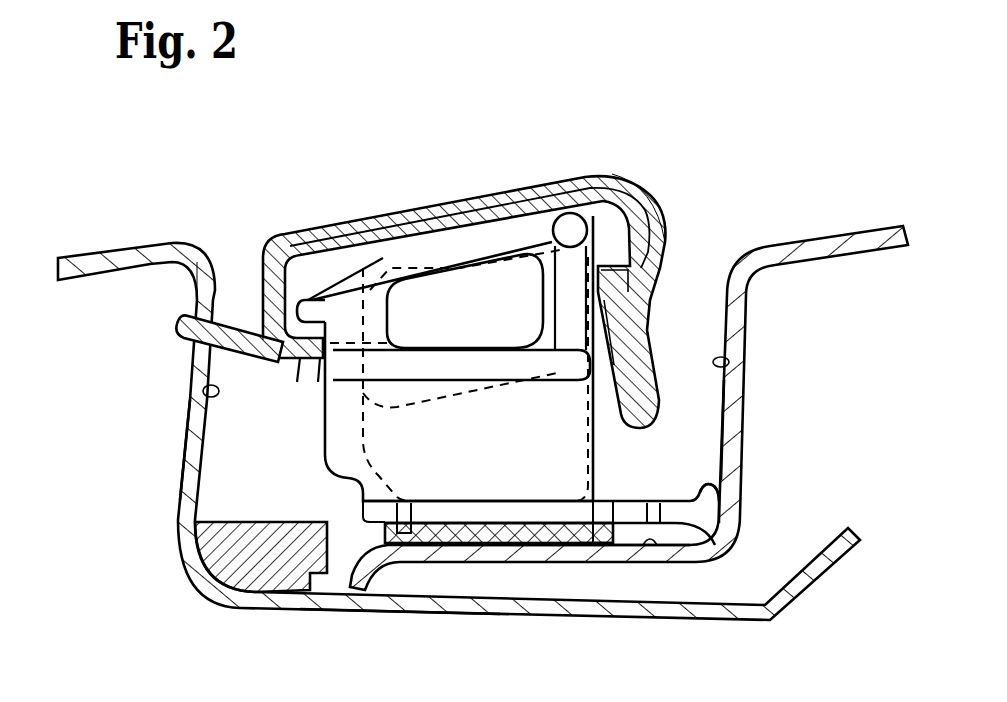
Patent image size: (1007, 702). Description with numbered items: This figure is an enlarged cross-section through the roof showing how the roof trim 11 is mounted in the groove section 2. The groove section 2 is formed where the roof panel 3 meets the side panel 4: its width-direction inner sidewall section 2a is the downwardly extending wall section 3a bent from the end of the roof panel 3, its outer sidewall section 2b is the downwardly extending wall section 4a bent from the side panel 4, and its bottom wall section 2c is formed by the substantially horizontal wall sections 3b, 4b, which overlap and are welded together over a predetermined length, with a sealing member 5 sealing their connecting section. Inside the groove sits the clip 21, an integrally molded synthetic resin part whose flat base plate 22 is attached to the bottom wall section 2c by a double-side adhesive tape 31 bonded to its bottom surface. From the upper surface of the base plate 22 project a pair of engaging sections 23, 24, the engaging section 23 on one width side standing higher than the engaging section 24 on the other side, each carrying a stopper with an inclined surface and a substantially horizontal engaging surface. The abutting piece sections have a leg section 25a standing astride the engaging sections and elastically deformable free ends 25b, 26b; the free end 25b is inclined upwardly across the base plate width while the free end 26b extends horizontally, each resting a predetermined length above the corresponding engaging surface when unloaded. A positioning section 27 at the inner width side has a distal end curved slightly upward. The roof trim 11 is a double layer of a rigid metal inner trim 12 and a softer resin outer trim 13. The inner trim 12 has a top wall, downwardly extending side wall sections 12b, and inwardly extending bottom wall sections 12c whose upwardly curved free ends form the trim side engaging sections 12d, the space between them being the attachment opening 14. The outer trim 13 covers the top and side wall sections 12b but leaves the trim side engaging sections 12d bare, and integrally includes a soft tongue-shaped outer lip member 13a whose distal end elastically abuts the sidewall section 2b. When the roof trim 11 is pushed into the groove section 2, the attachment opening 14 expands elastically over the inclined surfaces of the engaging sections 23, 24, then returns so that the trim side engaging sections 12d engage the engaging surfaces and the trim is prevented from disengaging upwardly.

The groove section 2 is at (238, 232).
The sidewall section 2a is at (729, 362).
The sidewall section 2b is at (203, 390).
The bottom wall section 2c is at (657, 540).
The roof panel 3 is at (850, 232).
The downwardly extending wall section 3a is at (744, 412).
The horizontal wall section 3b is at (553, 554).
The side panel 4 is at (96, 252).
The downwardly extending wall section 4a is at (190, 447).
The horizontal wall section 4b is at (385, 603).
The sealing member 5 is at (250, 565).
The roof trim 11 is at (635, 52).
The inner trim 12 is at (445, 208).
The outer trim 13 is at (492, 192).
The outer lip member 13a is at (237, 343).
The side wall section 12b is at (250, 272).
The bottom wall section 12c is at (300, 353).
The trim side engaging section 12d is at (317, 370).
The attachment opening 14 is at (600, 400).
The clip 21 is at (322, 460).
The base plate 22 is at (478, 505).
The engaging section 23 is at (597, 247).
The engaging section 24 is at (305, 300).
The leg section 25a is at (417, 450).
The free end 25b is at (521, 235).
The free end 26b is at (358, 252).
The positioning section 27 is at (716, 506).
The double-side adhesive tape 31 is at (592, 545).